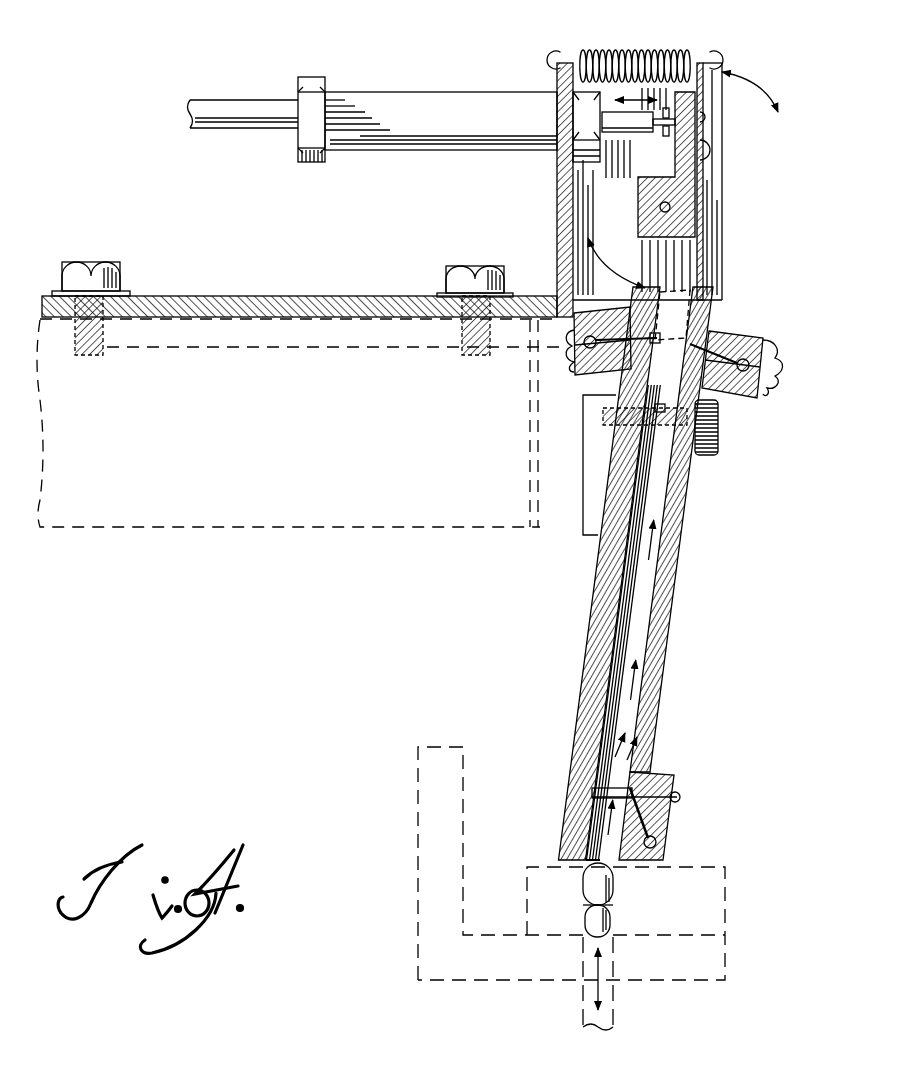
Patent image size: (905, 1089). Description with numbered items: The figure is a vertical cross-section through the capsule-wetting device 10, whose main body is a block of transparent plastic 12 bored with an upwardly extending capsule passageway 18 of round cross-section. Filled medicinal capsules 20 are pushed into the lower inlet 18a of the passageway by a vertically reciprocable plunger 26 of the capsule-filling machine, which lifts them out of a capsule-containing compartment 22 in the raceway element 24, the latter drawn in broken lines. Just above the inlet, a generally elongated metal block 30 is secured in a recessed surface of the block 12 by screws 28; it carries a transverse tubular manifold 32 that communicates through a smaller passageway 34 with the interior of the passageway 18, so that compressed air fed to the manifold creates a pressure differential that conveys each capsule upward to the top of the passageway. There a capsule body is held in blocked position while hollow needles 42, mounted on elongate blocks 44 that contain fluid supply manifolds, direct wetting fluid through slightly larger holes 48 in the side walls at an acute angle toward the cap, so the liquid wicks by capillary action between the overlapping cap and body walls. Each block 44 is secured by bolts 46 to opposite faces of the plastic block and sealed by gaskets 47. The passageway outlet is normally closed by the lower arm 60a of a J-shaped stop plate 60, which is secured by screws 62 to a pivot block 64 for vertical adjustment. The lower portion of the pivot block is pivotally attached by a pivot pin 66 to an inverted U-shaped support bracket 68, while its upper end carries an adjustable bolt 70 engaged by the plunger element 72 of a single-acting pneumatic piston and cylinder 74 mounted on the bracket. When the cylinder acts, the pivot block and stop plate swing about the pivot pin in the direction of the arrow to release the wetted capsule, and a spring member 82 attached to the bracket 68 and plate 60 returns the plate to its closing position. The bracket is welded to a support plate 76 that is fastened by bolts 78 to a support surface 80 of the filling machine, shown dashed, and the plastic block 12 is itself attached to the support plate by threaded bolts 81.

The capsule-wetting device 10 is at (650, 596).
The transparent plastic block 12 is at (670, 633).
The capsule passageway 18 is at (660, 598).
The lower inlet 18a is at (585, 862).
The capsule 20 is at (673, 313).
The capsule-containing compartment 22 is at (617, 927).
The raceway element 24 is at (727, 905).
The plunger 26 is at (617, 1005).
The screw 28 is at (680, 796).
The metal block 30 is at (674, 823).
The manifold 32 is at (656, 845).
The smaller passageway 34 is at (665, 789).
The hollow needle 42 is at (745, 333).
The elongate block 44 is at (770, 345).
The bolt 46 is at (572, 350).
The gasket 47 is at (598, 417).
The hole 48 is at (660, 404).
The J-shaped plate 60 is at (700, 250).
The lower arm 60a is at (650, 287).
The screw 62 is at (712, 150).
The pivot block 64 is at (638, 200).
The pivot pin 66 is at (660, 209).
The support bracket 68 is at (557, 195).
The adjustable bolt 70 is at (657, 138).
The plunger element 72 is at (629, 116).
The pneumatic piston and cylinder 74 is at (425, 90).
The support plate 76 is at (238, 297).
The bolt 78 is at (105, 262).
The support surface 80 is at (193, 510).
The threaded bolt 81 is at (718, 442).
The spring member 82 is at (648, 52).